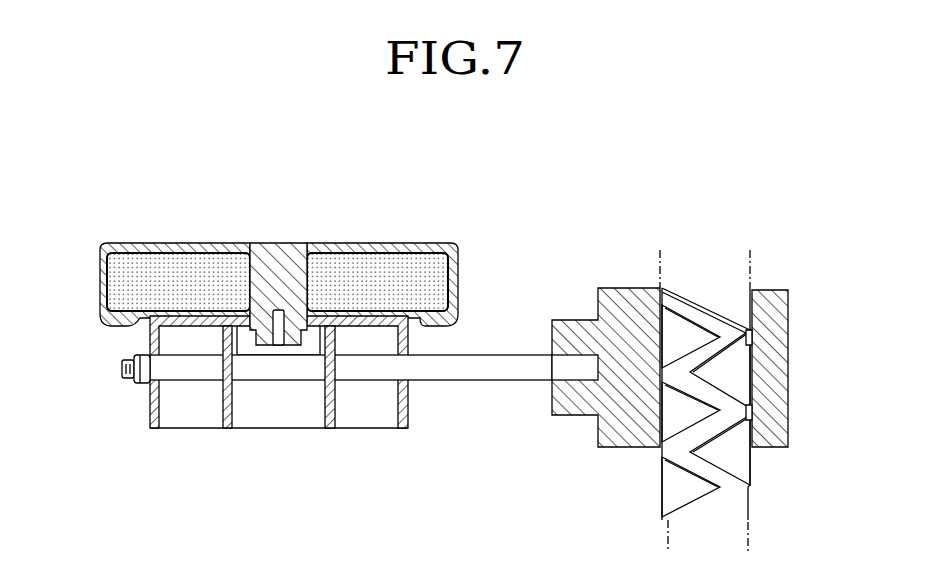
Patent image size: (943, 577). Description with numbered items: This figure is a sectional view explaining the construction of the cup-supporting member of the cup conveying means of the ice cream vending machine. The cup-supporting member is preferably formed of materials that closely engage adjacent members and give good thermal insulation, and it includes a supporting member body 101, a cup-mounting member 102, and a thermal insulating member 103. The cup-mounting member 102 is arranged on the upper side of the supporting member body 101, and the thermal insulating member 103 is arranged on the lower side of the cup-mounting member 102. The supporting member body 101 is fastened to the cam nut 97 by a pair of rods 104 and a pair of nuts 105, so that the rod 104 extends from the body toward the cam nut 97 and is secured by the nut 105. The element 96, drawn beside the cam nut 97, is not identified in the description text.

The gear 96 is at (753, 282).
The cam nut 97 is at (786, 362).
The supporting member body 101 is at (406, 404).
The cup-mounting member 102 is at (177, 245).
The thermal insulating member 103 is at (371, 247).
The rod 104 is at (503, 366).
The nut 105 is at (137, 356).